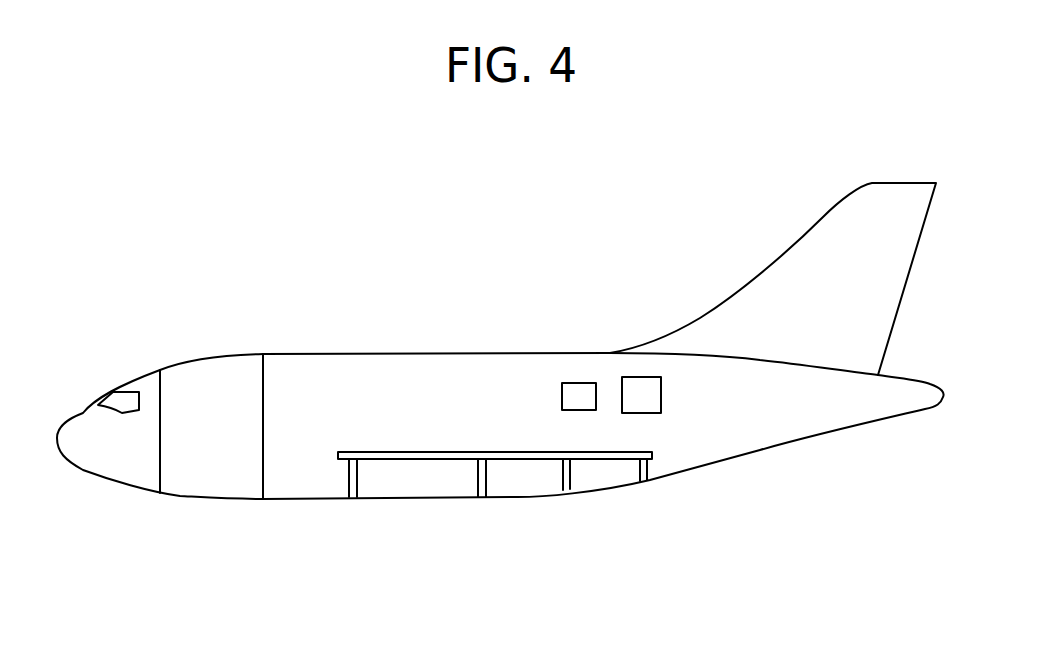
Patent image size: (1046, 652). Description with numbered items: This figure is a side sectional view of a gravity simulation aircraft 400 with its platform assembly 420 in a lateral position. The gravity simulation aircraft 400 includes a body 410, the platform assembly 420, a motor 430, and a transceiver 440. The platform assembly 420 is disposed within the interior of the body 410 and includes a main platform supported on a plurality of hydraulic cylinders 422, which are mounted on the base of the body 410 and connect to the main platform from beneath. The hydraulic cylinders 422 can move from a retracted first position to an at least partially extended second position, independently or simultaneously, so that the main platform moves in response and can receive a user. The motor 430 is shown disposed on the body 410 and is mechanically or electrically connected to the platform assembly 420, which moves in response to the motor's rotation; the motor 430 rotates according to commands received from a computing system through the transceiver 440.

The gravity simulation aircraft 400 is at (238, 278).
The body 410 is at (495, 353).
The platform assembly 420 is at (463, 446).
The hydraulic cylinders 422 is at (529, 452).
The motor 430 is at (577, 383).
The transceiver 440 is at (641, 377).